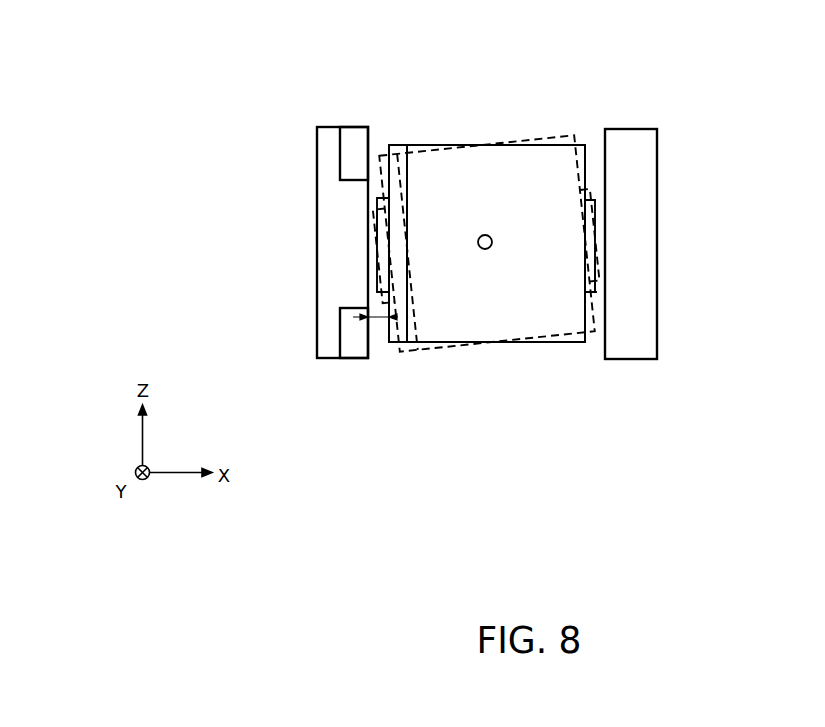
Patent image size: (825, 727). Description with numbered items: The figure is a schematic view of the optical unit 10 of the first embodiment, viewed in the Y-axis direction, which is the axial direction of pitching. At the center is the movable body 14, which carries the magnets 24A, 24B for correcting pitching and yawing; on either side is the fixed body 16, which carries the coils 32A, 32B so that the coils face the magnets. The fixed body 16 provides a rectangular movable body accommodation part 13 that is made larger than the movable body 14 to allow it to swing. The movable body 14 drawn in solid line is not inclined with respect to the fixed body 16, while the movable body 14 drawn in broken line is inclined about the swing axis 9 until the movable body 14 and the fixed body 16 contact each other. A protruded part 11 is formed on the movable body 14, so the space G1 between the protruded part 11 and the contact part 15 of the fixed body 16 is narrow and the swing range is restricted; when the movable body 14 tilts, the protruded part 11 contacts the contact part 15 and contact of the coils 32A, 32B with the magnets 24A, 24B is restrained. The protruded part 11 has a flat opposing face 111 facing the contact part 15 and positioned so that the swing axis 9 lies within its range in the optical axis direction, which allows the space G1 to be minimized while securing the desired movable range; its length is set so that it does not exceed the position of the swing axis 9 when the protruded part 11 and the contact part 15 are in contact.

The optical unit 10 is at (740, 82).
The movable body accommodation part 13 is at (508, 108).
The movable body 14 is at (510, 140).
The magnet 24A is at (397, 140).
The magnet 24B is at (411, 196).
The coil 32A is at (342, 388).
The coil 32B is at (341, 242).
The protruded part 11 is at (382, 190).
The contact part 15 is at (377, 203).
The fixed body 16 is at (316, 222).
The opposing face 111 is at (377, 215).
The swing axis 9 is at (485, 249).
The space G1 is at (371, 321).